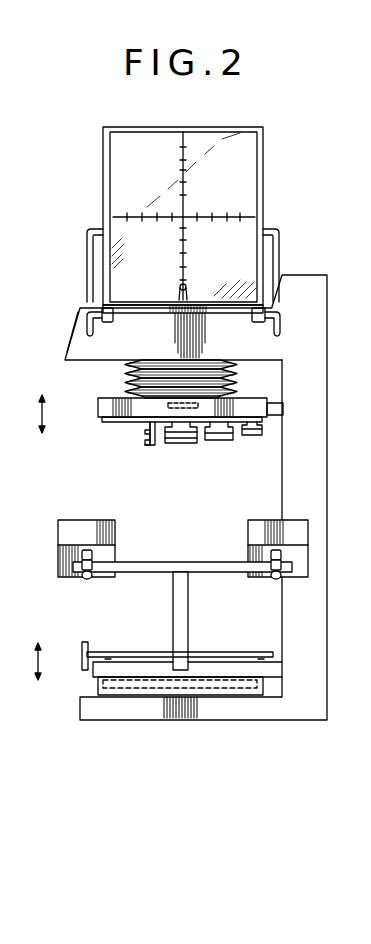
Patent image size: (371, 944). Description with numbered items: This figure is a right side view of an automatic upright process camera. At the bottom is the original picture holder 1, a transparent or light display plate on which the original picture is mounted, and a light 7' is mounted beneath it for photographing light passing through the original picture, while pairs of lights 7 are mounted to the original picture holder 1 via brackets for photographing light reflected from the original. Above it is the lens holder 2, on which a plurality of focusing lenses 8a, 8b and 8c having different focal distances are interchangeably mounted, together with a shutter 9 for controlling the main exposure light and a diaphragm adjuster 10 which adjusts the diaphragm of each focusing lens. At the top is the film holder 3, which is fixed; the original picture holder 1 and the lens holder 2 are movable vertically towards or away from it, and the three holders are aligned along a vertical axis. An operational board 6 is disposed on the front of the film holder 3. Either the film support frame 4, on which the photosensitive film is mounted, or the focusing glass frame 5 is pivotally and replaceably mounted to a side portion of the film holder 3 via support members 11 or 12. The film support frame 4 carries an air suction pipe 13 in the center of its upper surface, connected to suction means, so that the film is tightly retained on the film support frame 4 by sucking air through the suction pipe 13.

The original picture holder 1 is at (128, 655).
The lens holder 2 is at (98, 405).
The film holder 3 is at (82, 356).
The film support frame 4 is at (131, 298).
The focusing glass frame 5 is at (103, 160).
The operational board 6 is at (70, 328).
The lights 7 is at (170, 586).
The light 7' is at (150, 704).
The focusing lens 8a is at (176, 446).
The focusing lens 8b is at (215, 441).
The focusing lens 8c is at (251, 436).
The shutter 9 is at (168, 405).
The diaphragm adjuster 10 is at (145, 446).
The support member 11 is at (281, 320).
The support member 12 is at (280, 250).
The air suction pipe 13 is at (187, 286).